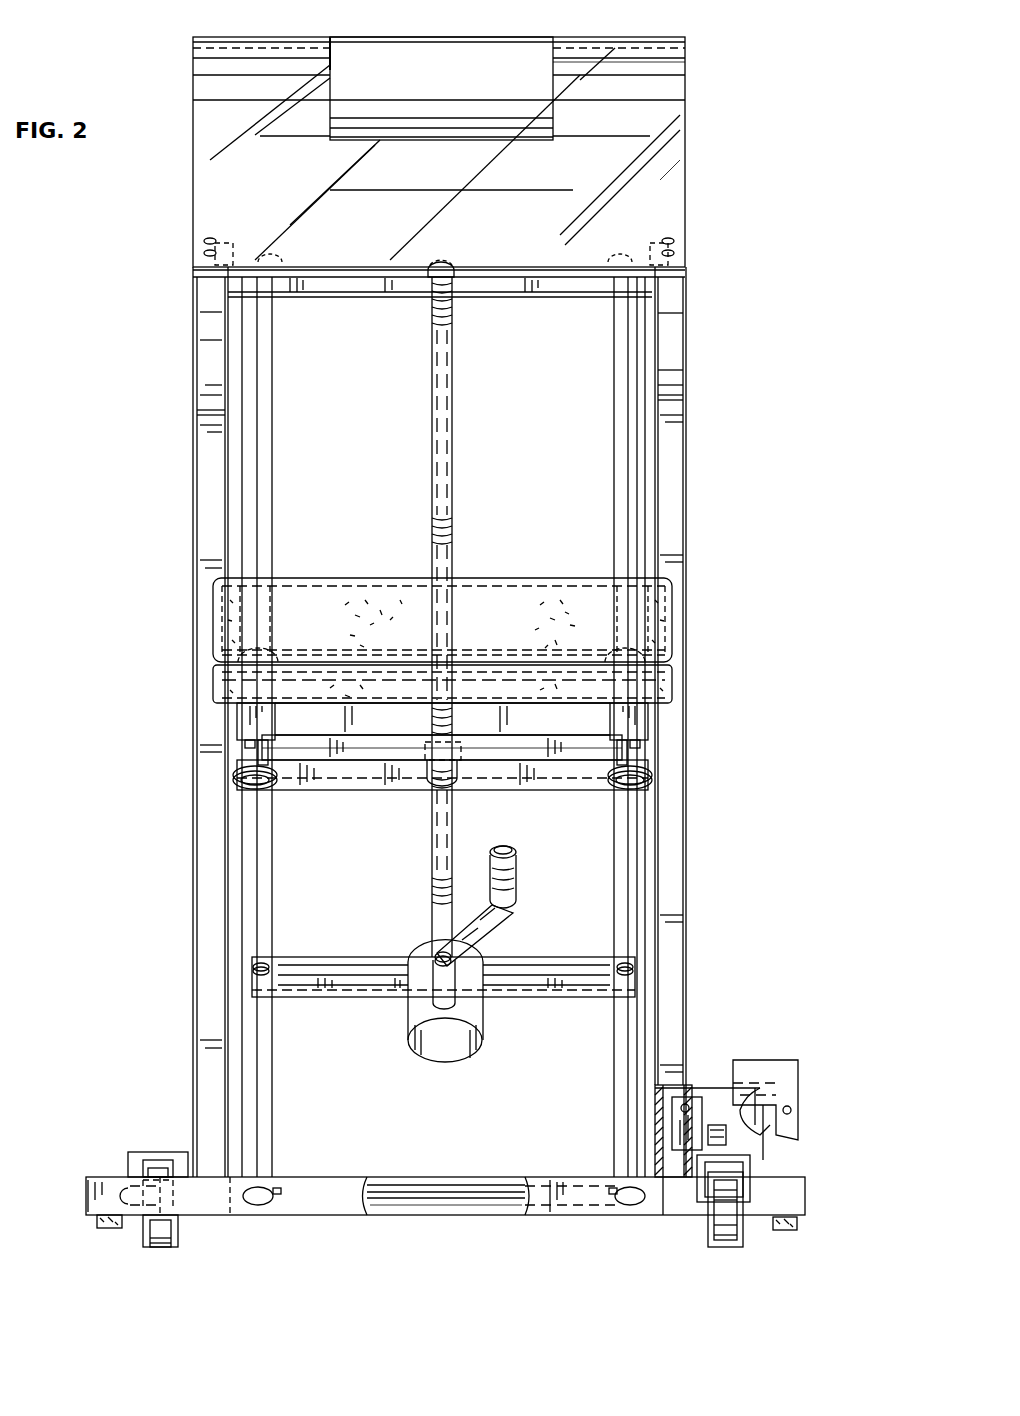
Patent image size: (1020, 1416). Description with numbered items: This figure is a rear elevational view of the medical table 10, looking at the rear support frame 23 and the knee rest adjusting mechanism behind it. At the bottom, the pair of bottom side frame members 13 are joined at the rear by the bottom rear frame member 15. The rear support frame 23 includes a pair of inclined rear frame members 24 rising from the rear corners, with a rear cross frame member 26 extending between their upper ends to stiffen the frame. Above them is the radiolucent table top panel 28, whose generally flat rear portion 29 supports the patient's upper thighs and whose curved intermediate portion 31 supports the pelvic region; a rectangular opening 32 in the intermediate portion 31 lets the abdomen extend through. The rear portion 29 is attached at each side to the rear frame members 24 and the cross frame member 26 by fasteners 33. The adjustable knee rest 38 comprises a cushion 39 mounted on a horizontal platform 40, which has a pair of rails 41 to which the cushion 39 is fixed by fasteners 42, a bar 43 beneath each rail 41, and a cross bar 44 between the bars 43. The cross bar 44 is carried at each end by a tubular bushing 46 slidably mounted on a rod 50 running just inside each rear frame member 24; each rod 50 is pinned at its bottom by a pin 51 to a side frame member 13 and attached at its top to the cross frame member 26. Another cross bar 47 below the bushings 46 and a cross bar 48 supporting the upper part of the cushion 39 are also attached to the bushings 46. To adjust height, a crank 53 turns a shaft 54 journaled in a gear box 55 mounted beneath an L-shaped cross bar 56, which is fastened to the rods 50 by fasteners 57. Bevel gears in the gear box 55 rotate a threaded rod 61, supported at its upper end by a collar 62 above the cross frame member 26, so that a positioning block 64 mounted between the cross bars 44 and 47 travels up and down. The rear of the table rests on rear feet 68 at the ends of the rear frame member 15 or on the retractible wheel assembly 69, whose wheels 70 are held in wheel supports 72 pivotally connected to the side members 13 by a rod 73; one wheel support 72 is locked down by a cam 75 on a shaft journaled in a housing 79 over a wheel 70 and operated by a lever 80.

The medical table 10 is at (690, 110).
The bottom side frame members 13 is at (215, 1200).
The bottom rear frame member 15 is at (340, 1212).
The rear support frame 23 is at (685, 612).
The inclined rear frame members 24 is at (210, 820).
The rear cross frame member 26 is at (540, 290).
The table top panel 28 is at (662, 73).
The rear portion 29 is at (672, 185).
The curved intermediate portion 31 is at (598, 50).
The rectangular opening 32 is at (555, 60).
The fasteners 33 is at (204, 253).
The adjustable knee rest 38 is at (688, 656).
The cushion 39 is at (215, 633).
The platform 40 is at (245, 712).
The rails 41 is at (248, 730).
The fasteners 42 is at (250, 744).
The bars 43 is at (262, 752).
The cross bar 44 is at (500, 748).
The tubular bushings 46 is at (275, 775).
The cross bar 47 is at (525, 770).
The cross bar 48 is at (497, 655).
The rods 50 is at (257, 415).
The pin 51 is at (278, 1188).
The crank 53 is at (513, 870).
The shaft 54 is at (438, 952).
The gear box 55 is at (470, 1015).
The L-shaped cross bar 56 is at (333, 988).
The fastener 57 is at (264, 960).
The threaded rod 61 is at (443, 410).
The collar 62 is at (452, 270).
The positioning block 64 is at (430, 770).
The rear feet 68 is at (108, 1228).
The retractible wheel assembly 69 is at (775, 1148).
The wheels 70 is at (165, 1247).
The wheel supports 72 is at (160, 1152).
The rod 73 is at (420, 1200).
The cam 75 is at (715, 1130).
The housing 79 is at (718, 1085).
The operational lever 80 is at (790, 1078).